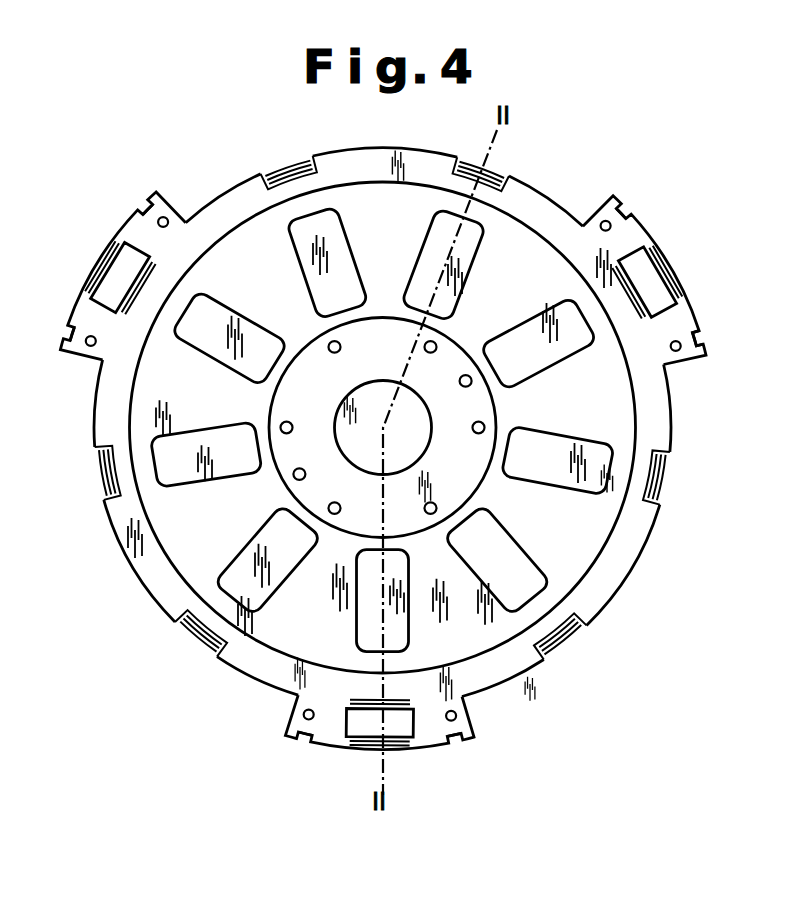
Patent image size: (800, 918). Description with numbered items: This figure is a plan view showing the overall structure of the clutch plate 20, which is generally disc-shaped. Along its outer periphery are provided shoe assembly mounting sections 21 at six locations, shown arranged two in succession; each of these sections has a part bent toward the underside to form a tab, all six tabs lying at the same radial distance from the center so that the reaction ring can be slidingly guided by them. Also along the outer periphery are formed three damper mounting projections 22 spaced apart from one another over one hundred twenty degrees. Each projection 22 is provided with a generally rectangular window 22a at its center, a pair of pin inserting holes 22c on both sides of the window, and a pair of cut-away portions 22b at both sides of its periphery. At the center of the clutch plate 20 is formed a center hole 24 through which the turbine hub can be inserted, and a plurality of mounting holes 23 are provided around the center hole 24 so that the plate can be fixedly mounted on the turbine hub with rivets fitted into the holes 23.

The clutch plate 20 is at (585, 185).
The shoe assembly mounting section 21 is at (301, 166).
The damper mounting projection 22 is at (637, 237).
The window 22a is at (650, 288).
The cut-away portion 22b is at (706, 350).
The pin inserting hole 22c is at (679, 351).
The mounting hole 23 is at (458, 453).
The center hole 24 is at (360, 467).